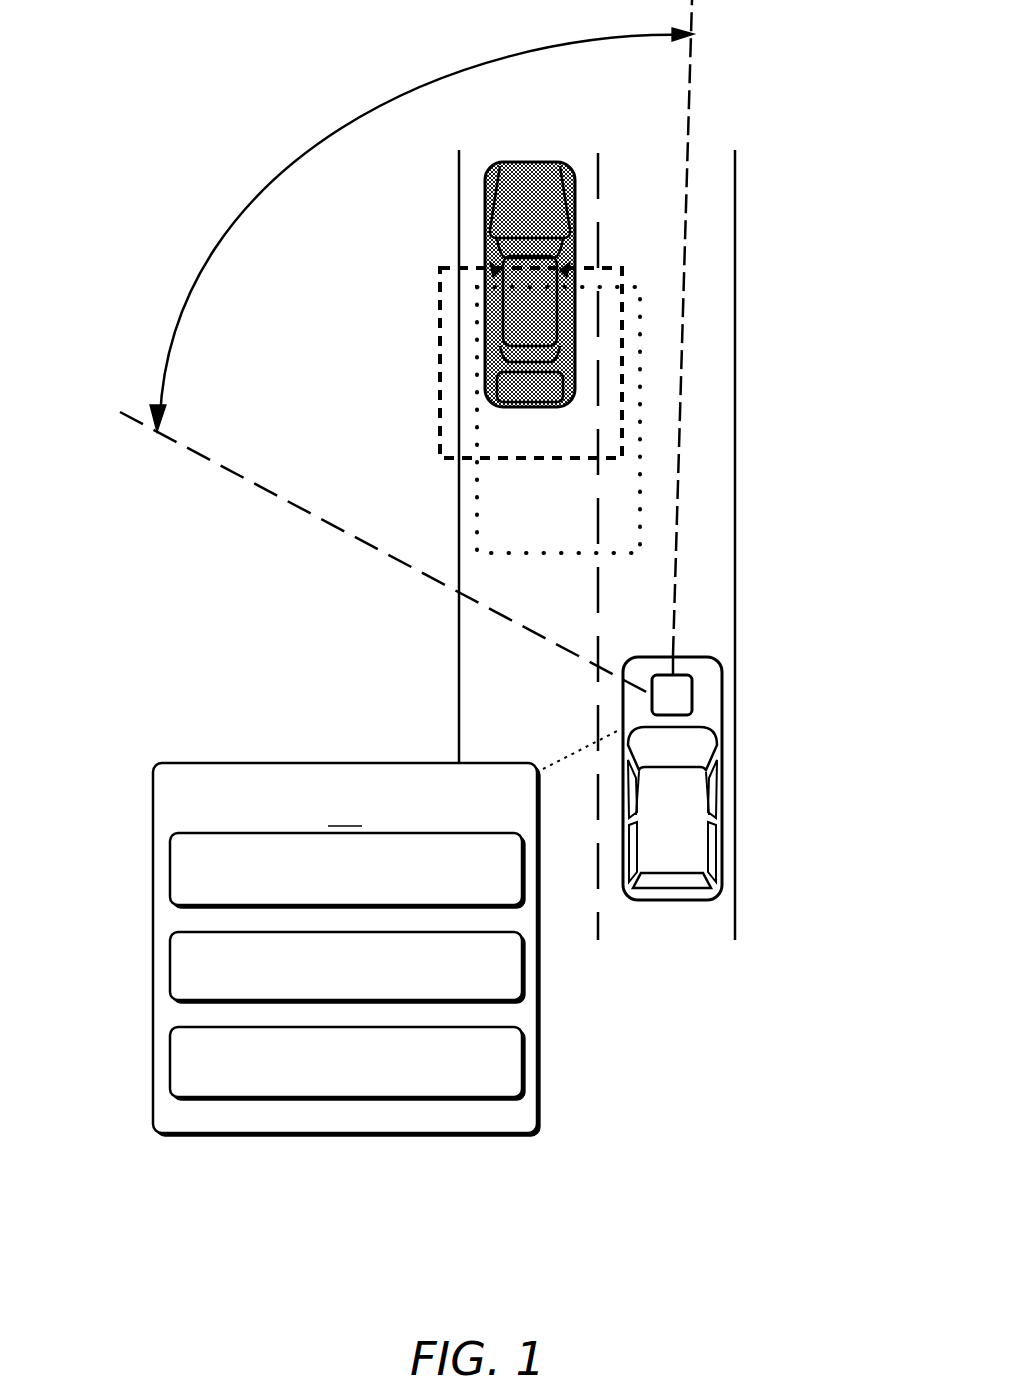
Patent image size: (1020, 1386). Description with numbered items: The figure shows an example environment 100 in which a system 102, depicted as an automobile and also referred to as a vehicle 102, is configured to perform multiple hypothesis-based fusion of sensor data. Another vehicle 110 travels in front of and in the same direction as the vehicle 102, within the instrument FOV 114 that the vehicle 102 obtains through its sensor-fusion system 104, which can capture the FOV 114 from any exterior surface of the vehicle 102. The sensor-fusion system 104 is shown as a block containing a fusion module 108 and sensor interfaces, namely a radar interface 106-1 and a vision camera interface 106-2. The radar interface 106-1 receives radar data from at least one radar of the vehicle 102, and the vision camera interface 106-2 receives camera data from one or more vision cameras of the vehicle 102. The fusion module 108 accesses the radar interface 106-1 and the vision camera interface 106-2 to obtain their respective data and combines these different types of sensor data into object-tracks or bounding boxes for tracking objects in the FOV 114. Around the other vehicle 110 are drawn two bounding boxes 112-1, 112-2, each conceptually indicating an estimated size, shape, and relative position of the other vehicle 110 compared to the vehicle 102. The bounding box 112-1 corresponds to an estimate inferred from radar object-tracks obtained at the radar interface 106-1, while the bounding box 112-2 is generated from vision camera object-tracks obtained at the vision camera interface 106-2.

The environment 100 is at (132, 30).
The vehicle 102 is at (722, 682).
The sensor-fusion system 104 is at (693, 694).
The radar interface 106-1 is at (319, 896).
The vision camera interface 106-2 is at (319, 991).
The fusion module 108 is at (329, 1087).
The other vehicle 110 is at (574, 200).
The bounding box 112-1 is at (440, 303).
The bounding box 112-2 is at (477, 503).
The instrument FOV 114 is at (220, 243).